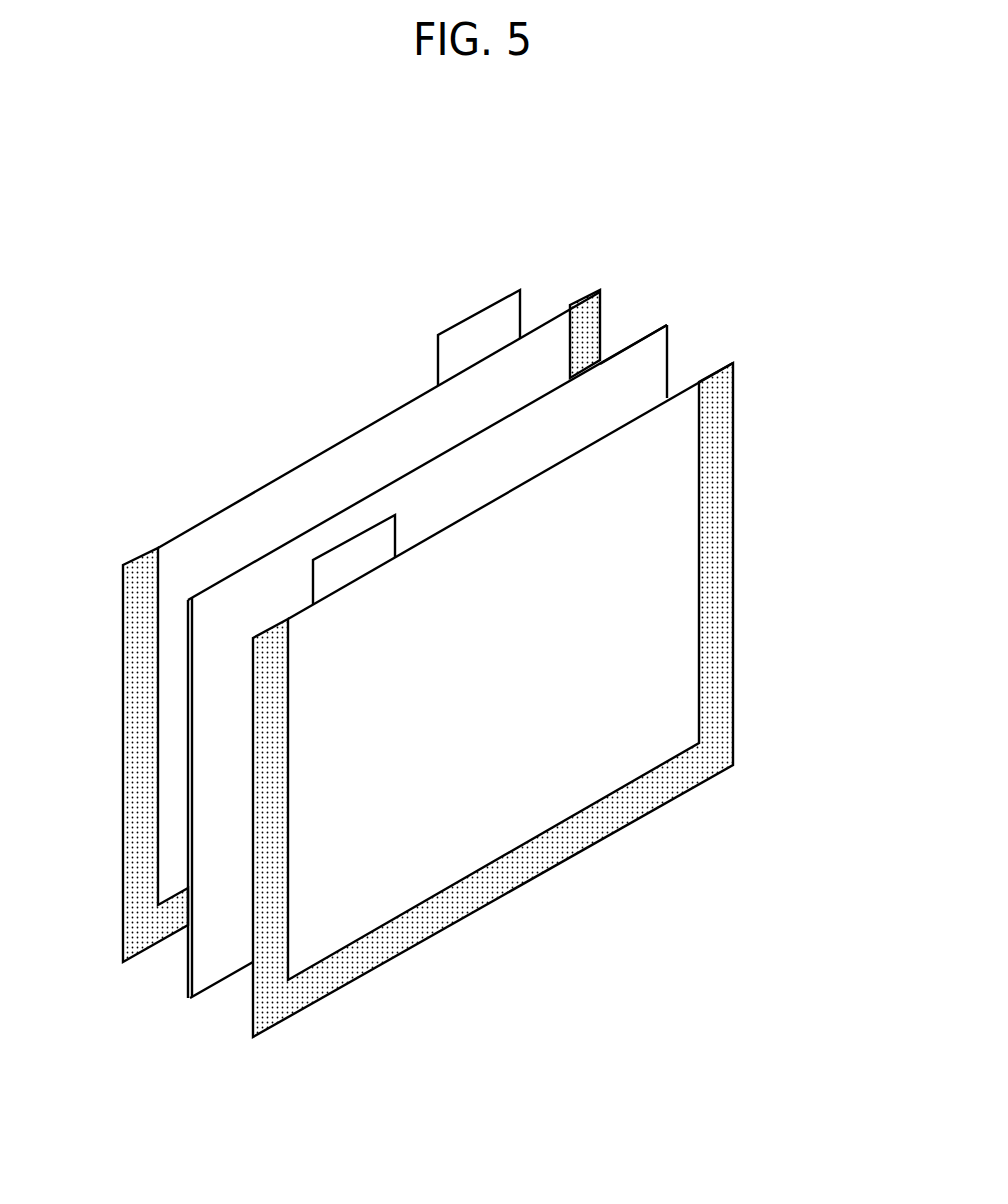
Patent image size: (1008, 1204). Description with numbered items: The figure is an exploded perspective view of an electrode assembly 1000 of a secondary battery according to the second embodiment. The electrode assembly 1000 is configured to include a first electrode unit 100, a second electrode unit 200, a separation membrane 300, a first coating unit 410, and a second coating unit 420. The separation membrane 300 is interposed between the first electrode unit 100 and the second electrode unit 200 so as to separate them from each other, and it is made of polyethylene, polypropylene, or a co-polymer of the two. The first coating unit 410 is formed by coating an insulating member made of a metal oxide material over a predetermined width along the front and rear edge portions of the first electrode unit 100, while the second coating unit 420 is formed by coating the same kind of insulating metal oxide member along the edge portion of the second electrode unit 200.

The electrode assembly 1000 is at (108, 402).
The first electrode unit 100 is at (637, 733).
The second electrode unit 200 is at (512, 386).
The separation membrane 300 is at (667, 346).
The first coating unit 410 is at (717, 618).
The second coating unit 420 is at (143, 560).